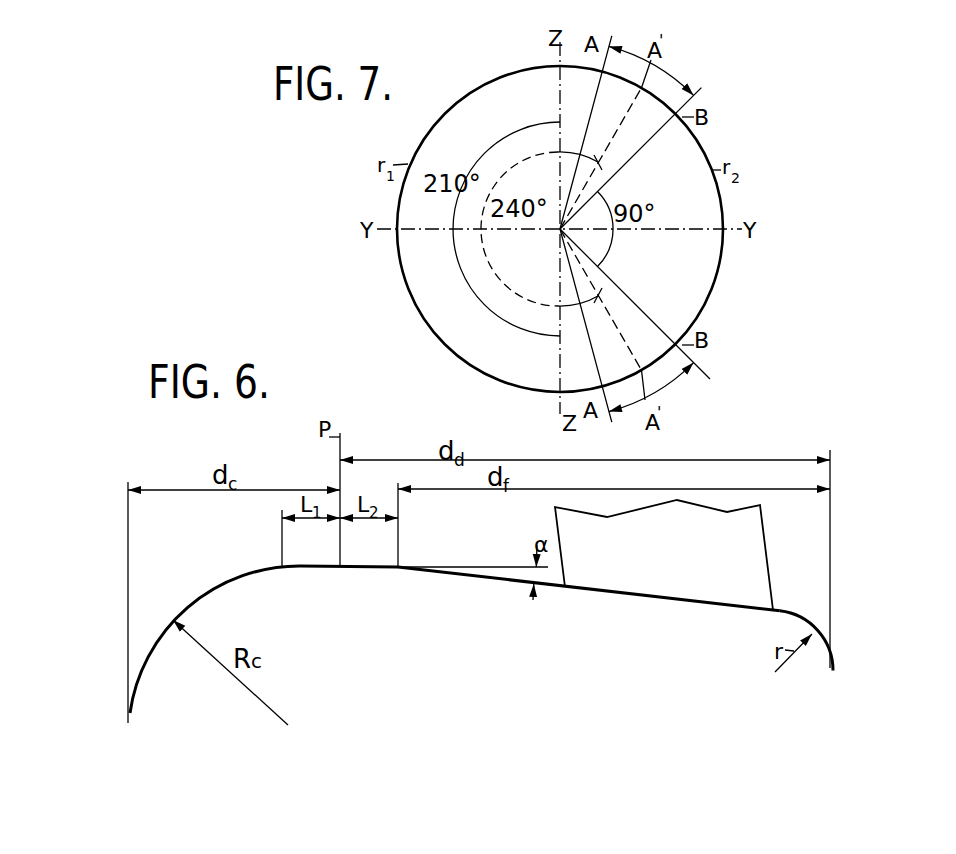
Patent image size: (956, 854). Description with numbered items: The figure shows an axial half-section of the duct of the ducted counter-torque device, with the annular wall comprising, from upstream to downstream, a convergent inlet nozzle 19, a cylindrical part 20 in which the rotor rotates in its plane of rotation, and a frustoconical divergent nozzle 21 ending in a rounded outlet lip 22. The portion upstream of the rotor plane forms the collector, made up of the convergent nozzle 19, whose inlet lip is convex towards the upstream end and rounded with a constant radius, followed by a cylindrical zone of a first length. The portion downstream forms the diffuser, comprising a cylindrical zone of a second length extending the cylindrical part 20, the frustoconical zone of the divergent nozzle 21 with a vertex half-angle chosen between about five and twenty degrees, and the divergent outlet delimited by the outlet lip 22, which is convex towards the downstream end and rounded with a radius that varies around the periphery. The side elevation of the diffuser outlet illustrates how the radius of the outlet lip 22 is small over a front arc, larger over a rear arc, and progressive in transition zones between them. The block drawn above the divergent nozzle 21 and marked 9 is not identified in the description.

The cutting insert 9 is at (765, 518).
The convergent inlet nozzle 19 is at (185, 603).
The cylindrical part 20 is at (313, 570).
The frustoconical divergent nozzle 21 is at (495, 582).
The rounded outlet lip 22 is at (794, 618).